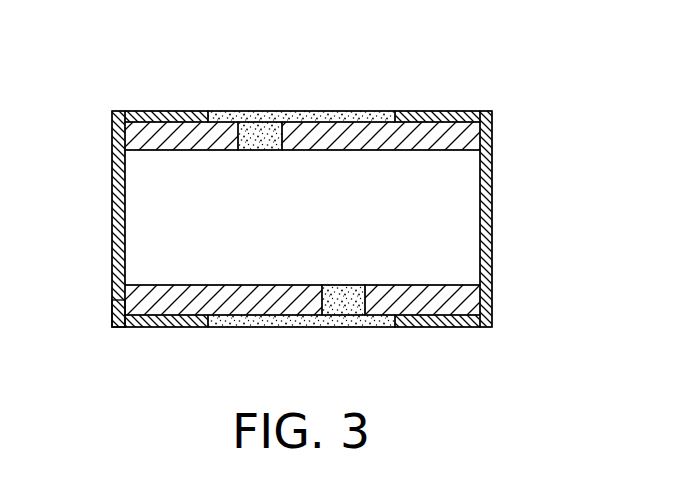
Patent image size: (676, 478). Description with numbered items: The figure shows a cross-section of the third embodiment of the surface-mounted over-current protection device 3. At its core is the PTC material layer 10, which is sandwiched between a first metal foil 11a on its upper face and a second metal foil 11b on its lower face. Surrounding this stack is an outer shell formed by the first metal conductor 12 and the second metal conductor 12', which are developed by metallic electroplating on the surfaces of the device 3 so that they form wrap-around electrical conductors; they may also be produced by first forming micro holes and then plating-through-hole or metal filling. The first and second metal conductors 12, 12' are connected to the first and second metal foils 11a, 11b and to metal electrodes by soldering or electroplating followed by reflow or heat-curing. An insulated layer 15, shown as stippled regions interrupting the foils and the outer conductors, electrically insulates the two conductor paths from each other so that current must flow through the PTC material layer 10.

The surface-mounted over-current protection device 3 is at (499, 84).
The PTC material layer 10 is at (460, 207).
The first metal foil 11a is at (348, 138).
The second metal foil 11b is at (242, 327).
The first metal conductor 12 is at (332, 219).
The second metal conductor 12' is at (87, 314).
The insulated layer 15 is at (298, 110).